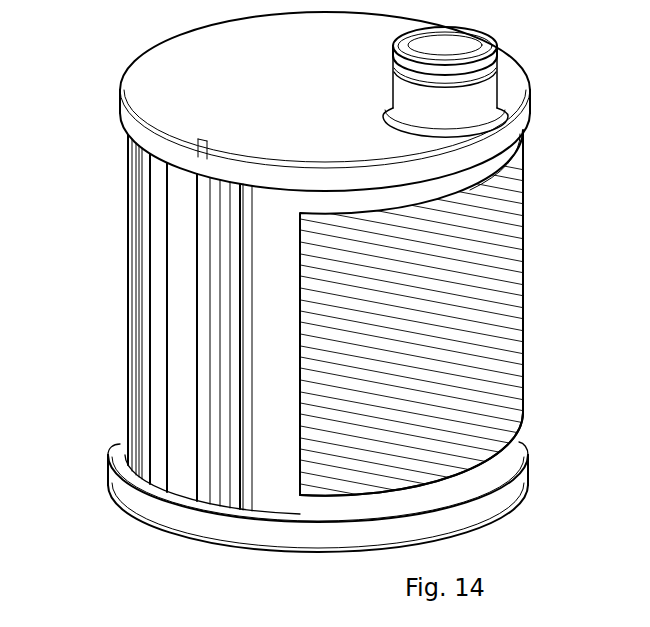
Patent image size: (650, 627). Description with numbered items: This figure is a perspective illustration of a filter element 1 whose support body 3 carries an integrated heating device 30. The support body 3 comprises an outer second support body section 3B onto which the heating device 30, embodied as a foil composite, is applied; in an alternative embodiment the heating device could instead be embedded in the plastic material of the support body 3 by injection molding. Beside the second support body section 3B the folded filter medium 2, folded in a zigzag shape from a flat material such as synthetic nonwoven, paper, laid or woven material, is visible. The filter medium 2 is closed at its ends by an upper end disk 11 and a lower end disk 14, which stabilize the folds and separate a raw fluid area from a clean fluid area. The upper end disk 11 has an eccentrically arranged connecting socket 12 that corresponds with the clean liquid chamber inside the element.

The filter element 1 is at (79, 193).
The upper end disk 11 is at (142, 88).
The connecting socket 12 is at (487, 93).
The folded filter medium 2 is at (138, 313).
The support body 3 is at (537, 243).
The heating device 30 is at (510, 343).
The second support body section 3B is at (286, 506).
The lower end disk 14 is at (203, 517).